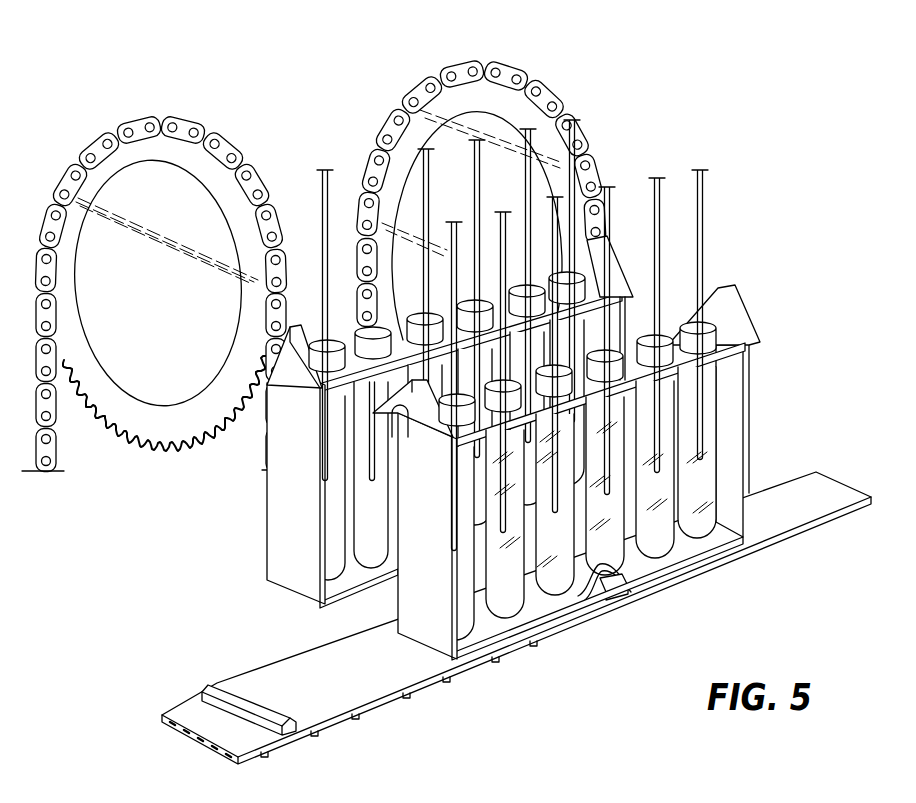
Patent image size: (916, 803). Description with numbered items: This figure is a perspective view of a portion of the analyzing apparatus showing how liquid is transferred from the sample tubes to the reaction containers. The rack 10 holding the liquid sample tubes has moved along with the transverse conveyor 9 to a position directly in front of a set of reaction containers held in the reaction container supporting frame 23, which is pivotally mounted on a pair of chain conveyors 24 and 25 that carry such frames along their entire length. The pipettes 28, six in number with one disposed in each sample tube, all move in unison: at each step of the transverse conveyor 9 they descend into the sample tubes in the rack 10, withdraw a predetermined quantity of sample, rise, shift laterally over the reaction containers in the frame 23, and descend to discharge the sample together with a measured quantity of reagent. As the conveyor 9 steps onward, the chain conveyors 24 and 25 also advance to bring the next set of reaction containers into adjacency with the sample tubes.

The transverse conveyor 9 is at (809, 510).
The rack 10 is at (751, 382).
The reaction container supporting frame 23 is at (283, 514).
The chain conveyor 24 is at (138, 122).
The chain conveyor 25 is at (412, 93).
The pipettes 28 is at (557, 238).